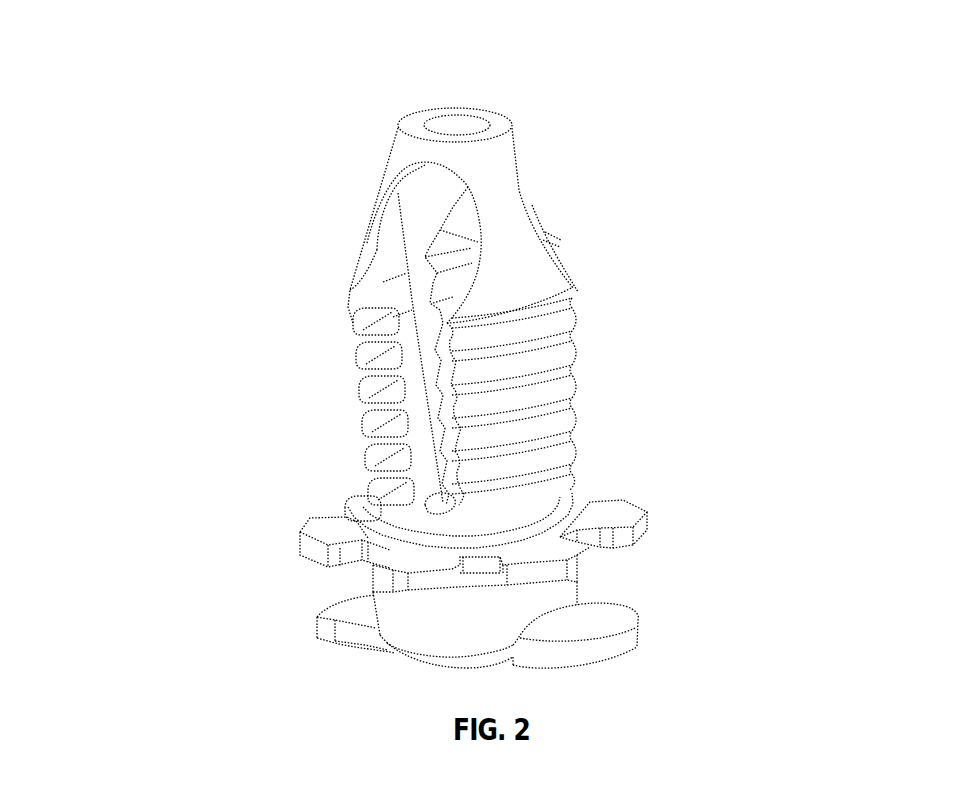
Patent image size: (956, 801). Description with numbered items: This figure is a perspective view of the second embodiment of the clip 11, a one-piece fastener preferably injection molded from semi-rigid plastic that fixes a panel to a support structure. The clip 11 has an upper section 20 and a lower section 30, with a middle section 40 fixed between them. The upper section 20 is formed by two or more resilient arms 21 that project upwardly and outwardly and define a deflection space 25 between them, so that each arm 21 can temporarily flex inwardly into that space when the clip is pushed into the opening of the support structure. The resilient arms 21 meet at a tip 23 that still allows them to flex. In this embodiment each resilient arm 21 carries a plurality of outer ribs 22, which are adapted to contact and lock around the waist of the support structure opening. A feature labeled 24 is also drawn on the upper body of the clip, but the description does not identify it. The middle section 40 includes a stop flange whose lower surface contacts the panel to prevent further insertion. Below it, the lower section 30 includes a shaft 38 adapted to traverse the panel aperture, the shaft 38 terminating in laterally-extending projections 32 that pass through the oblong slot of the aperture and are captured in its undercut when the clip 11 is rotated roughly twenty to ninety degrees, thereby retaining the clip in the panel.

The clip 11 is at (585, 288).
The upper section 20 is at (370, 243).
The resilient arms 21 is at (541, 212).
The outer ribs 22 is at (567, 353).
The tip 23 is at (462, 122).
The threaded shank 24 is at (543, 417).
The deflection space 25 is at (417, 233).
The lower section 30 is at (377, 592).
The laterally-extending projections 32 is at (353, 637).
The shaft 38 is at (560, 602).
The middle section 40 is at (313, 525).